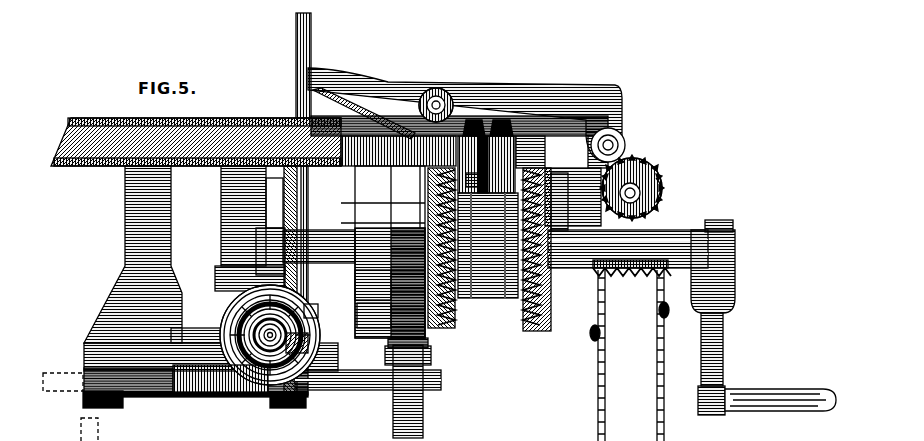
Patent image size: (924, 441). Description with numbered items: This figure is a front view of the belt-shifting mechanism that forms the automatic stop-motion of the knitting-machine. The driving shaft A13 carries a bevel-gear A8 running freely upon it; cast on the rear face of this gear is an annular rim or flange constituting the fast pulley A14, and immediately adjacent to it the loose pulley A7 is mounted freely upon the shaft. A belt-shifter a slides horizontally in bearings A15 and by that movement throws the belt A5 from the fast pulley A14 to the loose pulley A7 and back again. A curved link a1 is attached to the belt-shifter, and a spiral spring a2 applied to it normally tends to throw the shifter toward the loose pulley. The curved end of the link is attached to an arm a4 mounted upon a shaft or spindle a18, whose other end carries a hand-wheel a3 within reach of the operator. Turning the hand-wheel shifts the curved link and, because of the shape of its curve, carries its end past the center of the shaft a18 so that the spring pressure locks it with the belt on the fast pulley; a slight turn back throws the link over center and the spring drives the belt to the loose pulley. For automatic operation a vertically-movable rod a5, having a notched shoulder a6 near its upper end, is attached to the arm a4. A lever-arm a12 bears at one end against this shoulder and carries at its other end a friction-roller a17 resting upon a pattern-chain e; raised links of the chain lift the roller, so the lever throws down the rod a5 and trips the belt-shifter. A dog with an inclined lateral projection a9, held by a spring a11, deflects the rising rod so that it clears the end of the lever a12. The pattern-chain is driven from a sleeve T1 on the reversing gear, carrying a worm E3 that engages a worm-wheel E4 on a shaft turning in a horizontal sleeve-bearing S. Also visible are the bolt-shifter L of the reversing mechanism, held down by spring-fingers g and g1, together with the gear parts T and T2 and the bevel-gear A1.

The belt-shifter a is at (352, 383).
The curved link a1 is at (212, 356).
The spiral spring a2 is at (178, 390).
The hand-wheel a3 is at (222, 310).
The arm a4 is at (303, 304).
The vertically-movable rod a5 is at (303, 21).
The notched shoulder a6 is at (322, 84).
The inclined lateral projection a9 is at (270, 204).
The spring a11 is at (383, 252).
The lever-arm a12 is at (396, 78).
The friction-roller a17 is at (616, 137).
The shaft or spindle a18 is at (288, 334).
The bevel gear A1 is at (520, 300).
The belt A5 is at (418, 405).
The loose pulley A7 is at (358, 306).
The bevel-gear A8 is at (445, 300).
The shaft A13 is at (763, 313).
The fast pulley A14 is at (420, 333).
The bearings A15 is at (97, 400).
The screw-thread or worm E3 is at (620, 263).
The worm-wheel E4 is at (648, 166).
The pattern-chain e is at (592, 365).
The spring-finger g is at (465, 108).
The spring-finger g1 is at (491, 108).
The bolt-shifter L is at (462, 170).
The horizontal sleeve-bearing S is at (655, 176).
The gear T is at (367, 285).
The sleeve T1 is at (548, 268).
The gear cylinder T2 is at (488, 245).